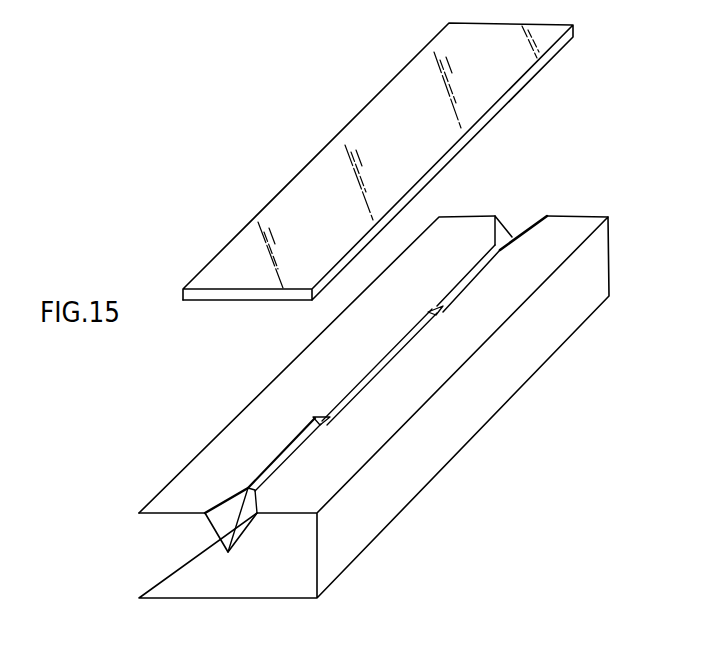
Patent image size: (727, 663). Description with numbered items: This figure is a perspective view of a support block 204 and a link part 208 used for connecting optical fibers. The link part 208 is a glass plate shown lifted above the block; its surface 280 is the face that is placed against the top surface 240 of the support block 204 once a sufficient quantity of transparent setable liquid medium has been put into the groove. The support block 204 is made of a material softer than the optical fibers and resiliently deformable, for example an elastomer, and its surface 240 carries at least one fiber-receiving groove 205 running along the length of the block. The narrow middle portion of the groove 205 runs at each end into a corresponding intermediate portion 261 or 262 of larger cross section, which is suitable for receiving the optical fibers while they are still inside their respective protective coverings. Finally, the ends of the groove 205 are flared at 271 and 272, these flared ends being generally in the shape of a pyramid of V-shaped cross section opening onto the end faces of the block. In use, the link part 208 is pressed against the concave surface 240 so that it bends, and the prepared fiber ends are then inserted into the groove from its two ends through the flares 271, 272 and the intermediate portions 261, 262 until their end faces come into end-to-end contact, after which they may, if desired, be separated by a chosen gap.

The support block 204 is at (600, 283).
The fiber-receiving groove 205 is at (364, 378).
The link part 208 is at (555, 52).
The top surface of support block 240 is at (569, 246).
The intermediate portion 261 is at (272, 460).
The intermediate portion 262 is at (470, 287).
The flared groove end 271 is at (221, 522).
The flared groove end 272 is at (507, 233).
The surface of link part 280 is at (228, 304).